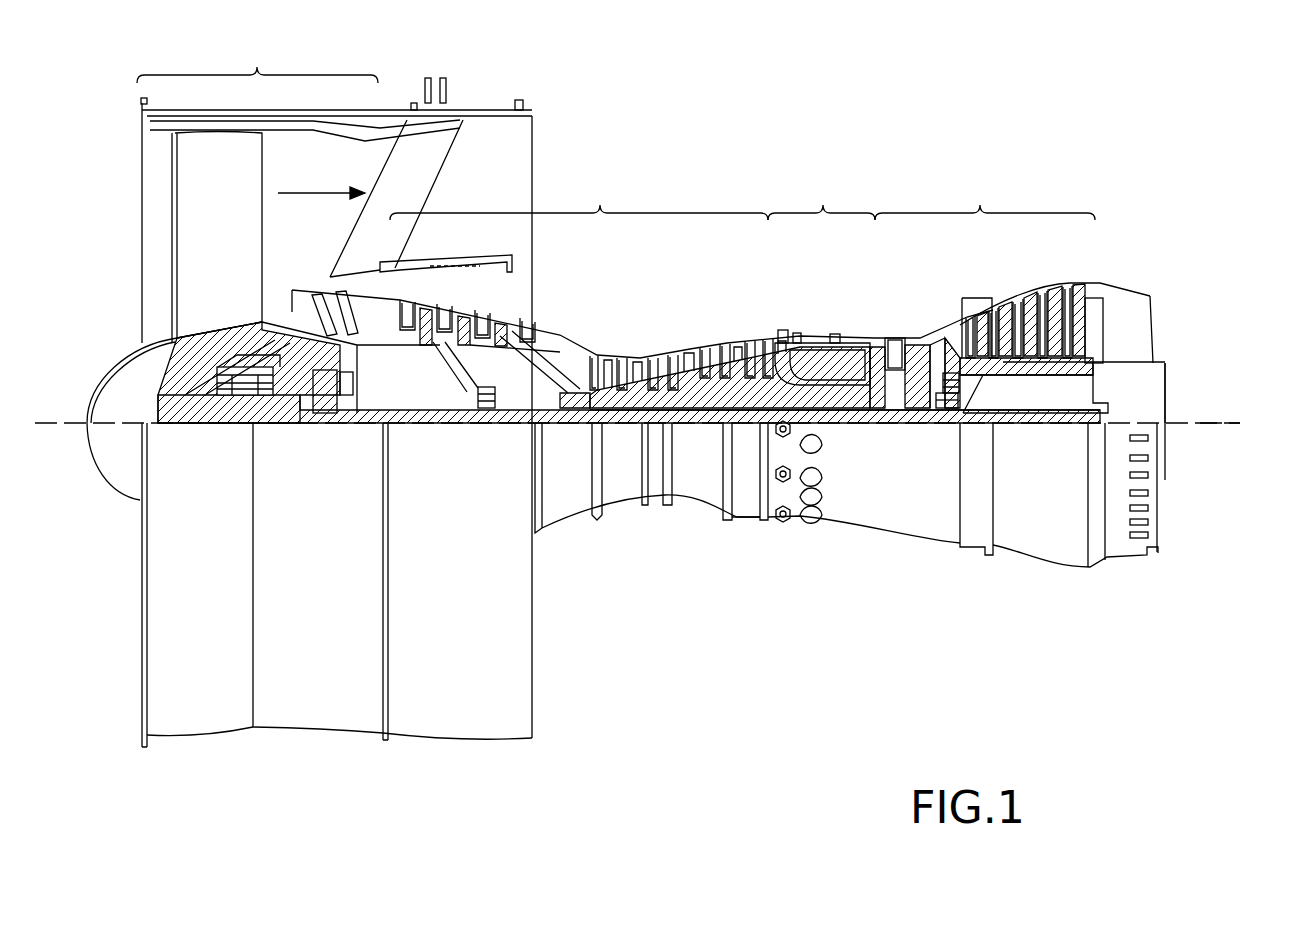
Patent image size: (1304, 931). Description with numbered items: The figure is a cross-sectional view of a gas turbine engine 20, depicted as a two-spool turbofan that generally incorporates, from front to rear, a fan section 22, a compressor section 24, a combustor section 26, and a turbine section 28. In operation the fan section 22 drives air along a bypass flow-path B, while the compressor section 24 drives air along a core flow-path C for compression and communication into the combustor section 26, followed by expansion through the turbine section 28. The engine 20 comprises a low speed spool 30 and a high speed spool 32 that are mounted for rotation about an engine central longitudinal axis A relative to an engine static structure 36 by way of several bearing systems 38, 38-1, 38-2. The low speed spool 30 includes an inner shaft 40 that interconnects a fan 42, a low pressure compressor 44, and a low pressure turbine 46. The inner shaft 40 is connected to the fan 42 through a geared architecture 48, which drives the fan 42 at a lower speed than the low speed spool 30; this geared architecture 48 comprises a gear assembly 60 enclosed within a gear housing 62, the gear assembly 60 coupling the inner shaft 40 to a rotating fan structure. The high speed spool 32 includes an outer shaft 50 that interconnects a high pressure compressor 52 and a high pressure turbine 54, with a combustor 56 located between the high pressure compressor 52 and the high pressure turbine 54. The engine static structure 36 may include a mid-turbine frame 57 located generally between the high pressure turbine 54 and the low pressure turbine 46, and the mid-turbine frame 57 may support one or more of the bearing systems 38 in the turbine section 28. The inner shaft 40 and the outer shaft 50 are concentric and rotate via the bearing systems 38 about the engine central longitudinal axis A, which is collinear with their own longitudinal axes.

The gas turbine engine 20 is at (878, 138).
The fan section 22 is at (330, 159).
The compressor section 24 is at (642, 265).
The combustor section 26 is at (821, 197).
The turbine section 28 is at (985, 197).
The low speed spool 30 is at (705, 444).
The high speed spool 32 is at (743, 391).
The engine static structure 36 is at (317, 708).
The bearing system 38 is at (943, 410).
The bearing system 38-1 is at (222, 397).
The bearing system 38-2 is at (485, 406).
The inner shaft 40 is at (555, 424).
The fan 42 is at (203, 241).
The low pressure compressor 44 is at (465, 320).
The low pressure turbine 46 is at (1027, 308).
The geared architecture 48 is at (347, 446).
The outer shaft 50 is at (832, 410).
The high pressure compressor 52 is at (684, 391).
The high pressure turbine 54 is at (895, 336).
The combustor 56 is at (818, 360).
The mid-turbine frame 57 is at (947, 373).
The gear assembly 60 is at (372, 405).
The gear housing 62 is at (350, 363).
The engine central longitudinal axis A is at (637, 390).
The bypass flow-path B is at (307, 195).
The core flow-path C is at (283, 303).